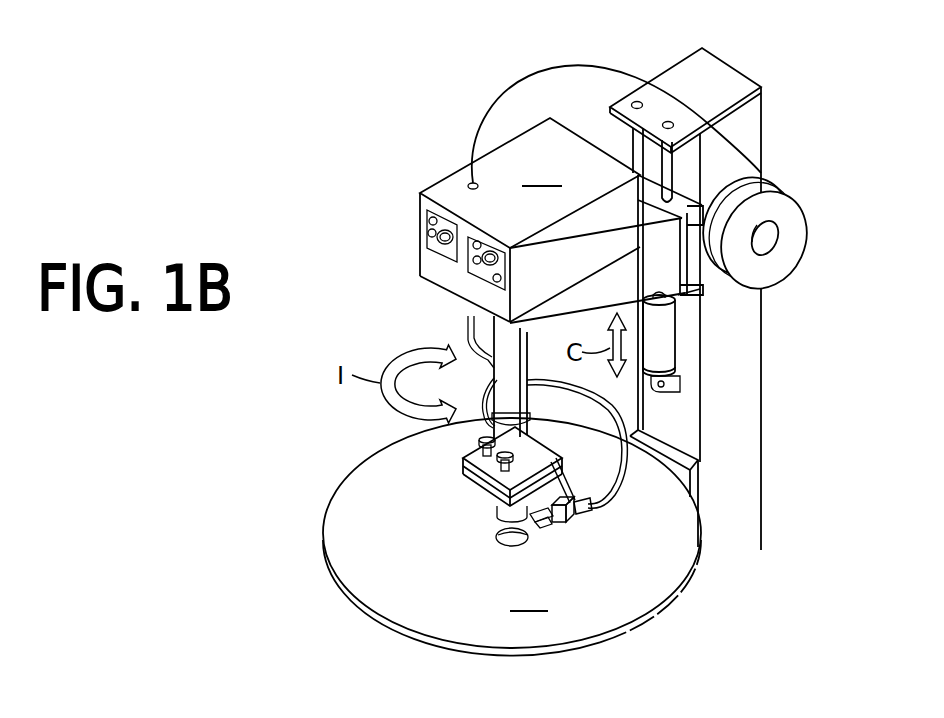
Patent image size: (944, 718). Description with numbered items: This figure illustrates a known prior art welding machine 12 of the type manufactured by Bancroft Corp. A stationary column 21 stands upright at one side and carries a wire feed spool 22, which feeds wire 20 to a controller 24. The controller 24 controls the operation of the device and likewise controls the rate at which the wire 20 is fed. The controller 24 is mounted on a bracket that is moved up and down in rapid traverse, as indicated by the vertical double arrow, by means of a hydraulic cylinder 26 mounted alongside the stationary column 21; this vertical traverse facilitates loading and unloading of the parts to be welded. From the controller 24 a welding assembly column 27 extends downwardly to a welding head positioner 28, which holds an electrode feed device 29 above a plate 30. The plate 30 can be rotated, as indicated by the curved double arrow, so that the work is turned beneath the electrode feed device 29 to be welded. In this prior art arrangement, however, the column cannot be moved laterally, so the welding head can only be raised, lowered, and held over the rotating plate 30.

The welding apparatus 12 is at (260, 12).
The wire 20 is at (540, 72).
The stationary column 21 is at (750, 383).
The wire feed spool 22 is at (803, 215).
The controller 24 is at (530, 220).
The hydraulic cylinder 26 is at (665, 335).
The welding assembly column 27 is at (513, 390).
The welding head positioner 28 is at (547, 457).
The electrode feed device 29 is at (560, 523).
The plate 30 is at (512, 537).